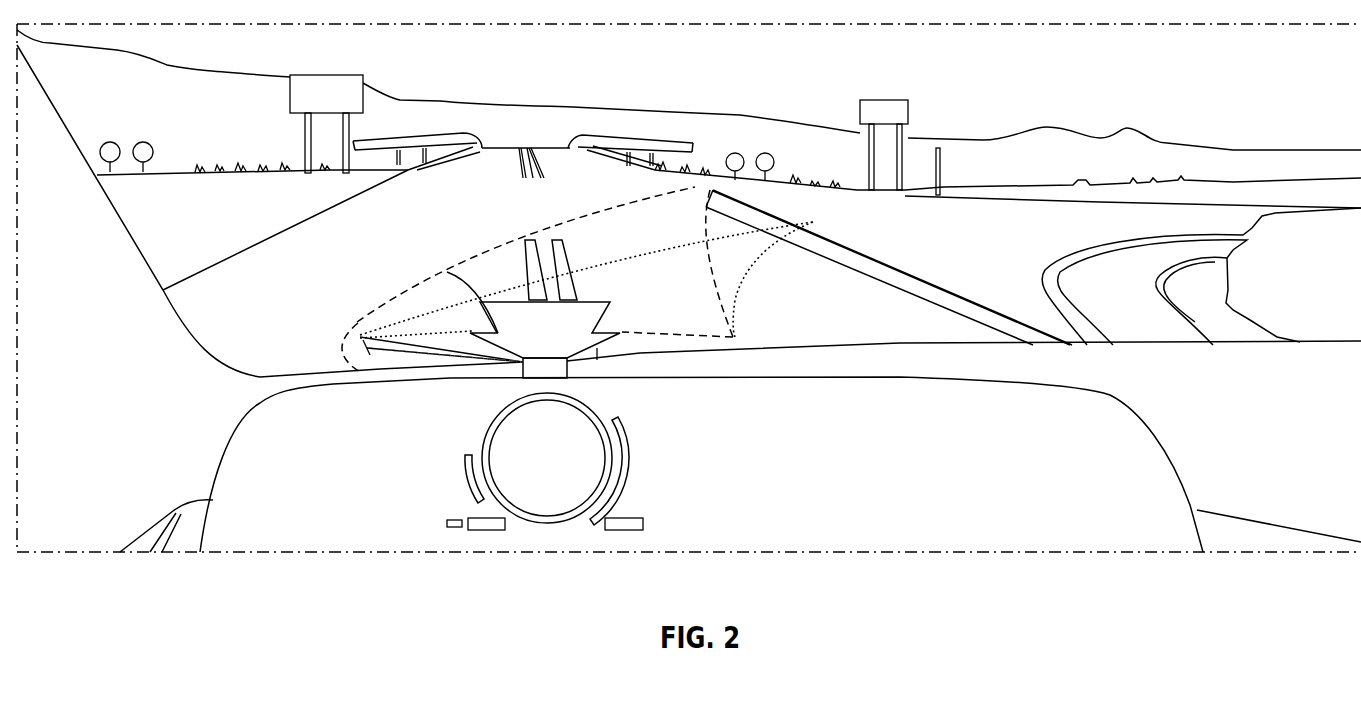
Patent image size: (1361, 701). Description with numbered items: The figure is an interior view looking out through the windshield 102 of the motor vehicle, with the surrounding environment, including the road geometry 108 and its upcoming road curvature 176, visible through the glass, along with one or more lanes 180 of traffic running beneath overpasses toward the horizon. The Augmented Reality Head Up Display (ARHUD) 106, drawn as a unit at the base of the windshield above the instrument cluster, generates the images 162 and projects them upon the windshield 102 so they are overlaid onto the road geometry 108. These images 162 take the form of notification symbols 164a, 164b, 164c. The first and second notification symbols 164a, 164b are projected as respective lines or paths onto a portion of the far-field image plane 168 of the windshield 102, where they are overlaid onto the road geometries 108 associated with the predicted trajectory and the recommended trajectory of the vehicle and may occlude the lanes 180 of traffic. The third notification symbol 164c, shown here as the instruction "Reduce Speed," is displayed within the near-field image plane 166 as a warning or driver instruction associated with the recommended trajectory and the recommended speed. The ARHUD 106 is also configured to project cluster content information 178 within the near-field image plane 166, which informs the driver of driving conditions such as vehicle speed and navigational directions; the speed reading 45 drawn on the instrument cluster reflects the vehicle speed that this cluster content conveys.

The windshield 102 is at (540, 82).
The Augmented Reality Head Up Display (ARHUD) 106 is at (523, 365).
The road geometry 108 is at (946, 257).
The upcoming road curvature 176 is at (1001, 257).
The far-field image plane 168 is at (783, 200).
The lanes of traffic 180 is at (498, 183).
The images 162 is at (495, 251).
The first notification symbol 164a is at (537, 279).
The second notification symbol 164b is at (742, 285).
The third notification symbol 164c is at (450, 273).
The cluster content information 178 is at (472, 302).
The near-field image plane 166 is at (608, 313).
The speedometer reading 45 is at (545, 461).